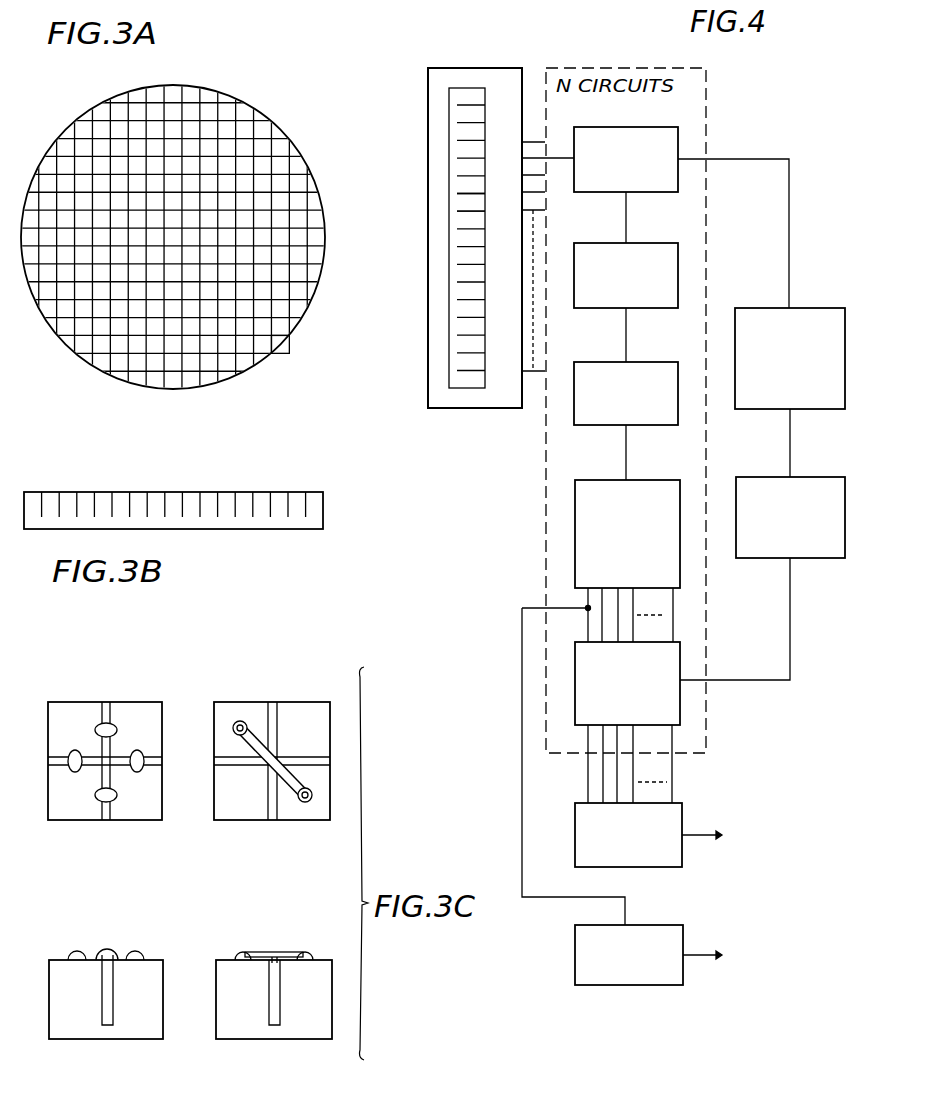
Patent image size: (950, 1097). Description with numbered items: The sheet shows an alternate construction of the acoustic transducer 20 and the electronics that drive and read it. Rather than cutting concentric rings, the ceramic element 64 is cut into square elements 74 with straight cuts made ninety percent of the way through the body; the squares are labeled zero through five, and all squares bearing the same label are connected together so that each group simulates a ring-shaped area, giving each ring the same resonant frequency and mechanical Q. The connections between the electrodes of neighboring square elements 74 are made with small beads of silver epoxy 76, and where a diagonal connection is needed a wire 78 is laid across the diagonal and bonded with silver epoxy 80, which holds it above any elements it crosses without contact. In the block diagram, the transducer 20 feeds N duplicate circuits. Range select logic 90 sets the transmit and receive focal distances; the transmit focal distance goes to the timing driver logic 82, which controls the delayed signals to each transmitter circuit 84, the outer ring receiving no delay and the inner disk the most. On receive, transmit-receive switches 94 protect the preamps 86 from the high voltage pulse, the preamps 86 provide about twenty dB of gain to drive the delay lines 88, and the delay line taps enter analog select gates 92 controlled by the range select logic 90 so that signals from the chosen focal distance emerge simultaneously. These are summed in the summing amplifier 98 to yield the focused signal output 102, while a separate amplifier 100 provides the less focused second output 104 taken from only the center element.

In FIG. 4, the transducer 20 is at (487, 66).
In FIG. 3A, the ceramic element 64 is at (312, 297).
In FIG. 4, the ceramic element 64 is at (481, 222).
In FIG. 3A, the square elements 74 is at (273, 350).
In FIG. 3B, the square elements 74 is at (312, 492).
In FIG. 3C, the square elements 74 is at (132, 702).
In FIG. 3C, the beads of silver epoxy 76 is at (113, 797).
In FIG. 3C, the wire 78 is at (278, 752).
In FIG. 3C, the silver epoxy 80 is at (244, 722).
In FIG. 4, the timing driver logic 82 is at (815, 308).
In FIG. 4, the transmitter circuits 84 is at (632, 127).
In FIG. 4, the preamps 86 is at (650, 362).
In FIG. 4, the delay lines 88 is at (650, 480).
In FIG. 4, the range select logic 90 is at (812, 558).
In FIG. 4, the analog select gates 92 is at (637, 725).
In FIG. 4, the transmit-receive switches 94 is at (650, 243).
In FIG. 4, the summing amplifier 98 is at (650, 867).
In FIG. 4, the amplifier 100 is at (640, 985).
In FIG. 4, the focused signal output 102 is at (700, 832).
In FIG. 4, the second output 104 is at (700, 952).